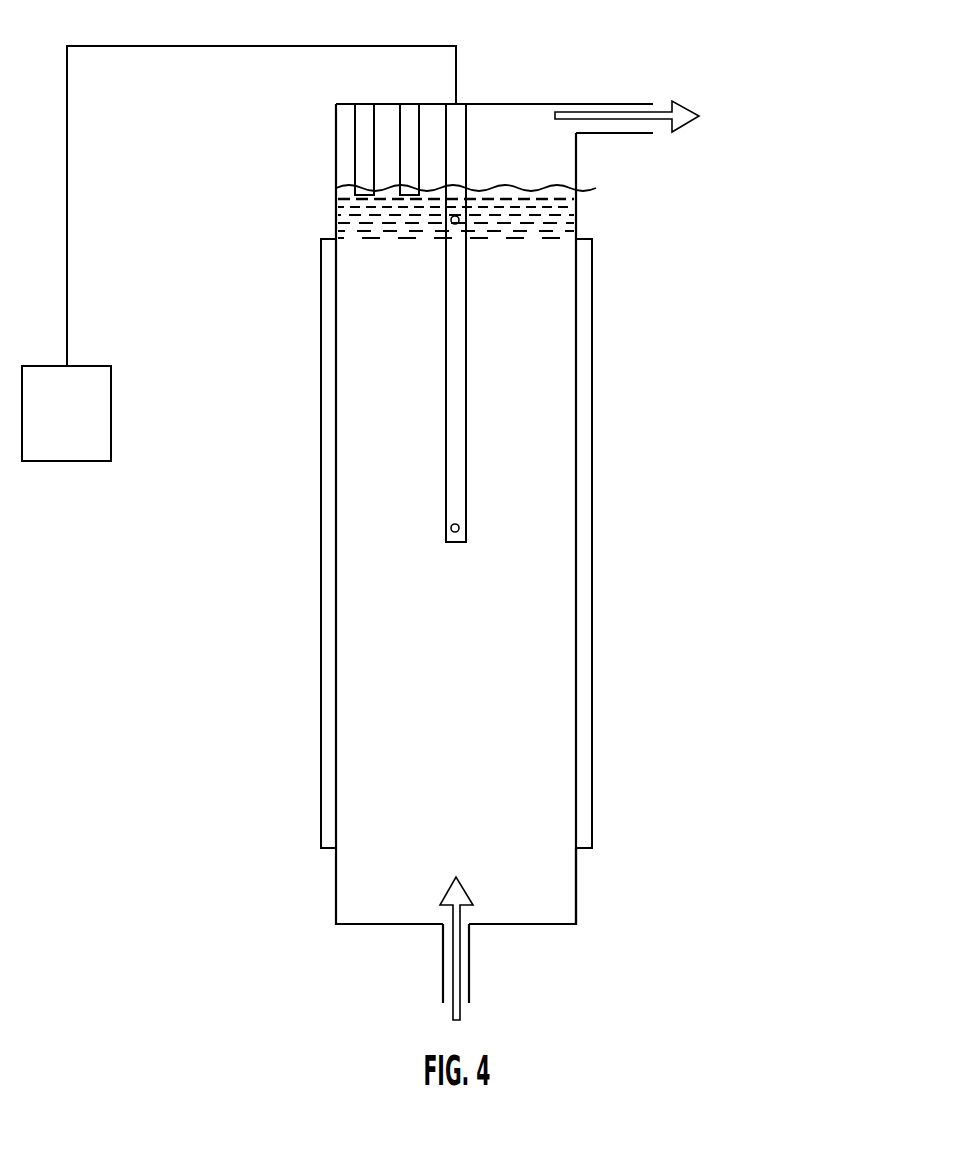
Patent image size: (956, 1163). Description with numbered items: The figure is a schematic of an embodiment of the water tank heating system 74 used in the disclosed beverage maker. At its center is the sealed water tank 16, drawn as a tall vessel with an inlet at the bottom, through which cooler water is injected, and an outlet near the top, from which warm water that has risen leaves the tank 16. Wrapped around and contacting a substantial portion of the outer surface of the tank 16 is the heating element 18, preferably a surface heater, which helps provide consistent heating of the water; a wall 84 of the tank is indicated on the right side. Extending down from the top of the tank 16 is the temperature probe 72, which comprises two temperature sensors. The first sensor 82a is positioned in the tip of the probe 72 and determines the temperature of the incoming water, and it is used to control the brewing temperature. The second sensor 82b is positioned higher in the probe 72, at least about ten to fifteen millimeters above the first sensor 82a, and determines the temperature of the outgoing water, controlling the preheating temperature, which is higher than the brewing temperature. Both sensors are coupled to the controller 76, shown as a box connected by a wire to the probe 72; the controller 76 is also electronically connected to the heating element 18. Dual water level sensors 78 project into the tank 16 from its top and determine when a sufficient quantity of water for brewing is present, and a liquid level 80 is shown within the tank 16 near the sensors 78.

The sealed water tank 16 is at (655, 681).
The heating element 18 is at (321, 643).
The temperature probe 72 is at (460, 104).
The heating system 74 is at (795, 77).
The controller 76 is at (67, 462).
The water level sensors 78 is at (409, 104).
The liquid level 80 is at (336, 171).
The first sensor 82a is at (460, 528).
The second sensor 82b is at (460, 220).
The vessel wall 84 is at (577, 878).